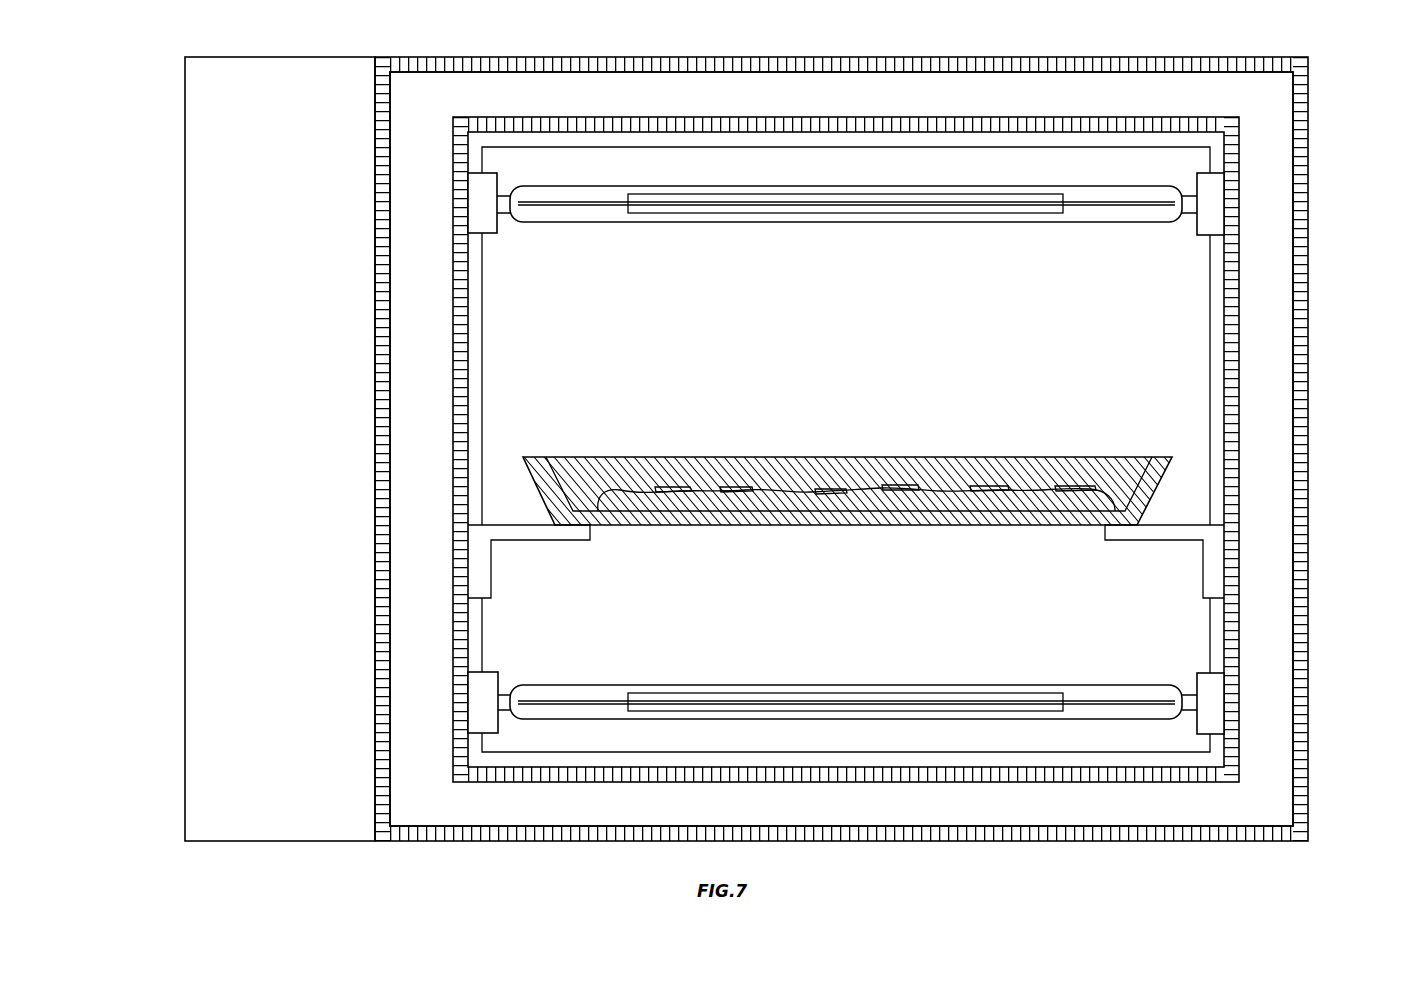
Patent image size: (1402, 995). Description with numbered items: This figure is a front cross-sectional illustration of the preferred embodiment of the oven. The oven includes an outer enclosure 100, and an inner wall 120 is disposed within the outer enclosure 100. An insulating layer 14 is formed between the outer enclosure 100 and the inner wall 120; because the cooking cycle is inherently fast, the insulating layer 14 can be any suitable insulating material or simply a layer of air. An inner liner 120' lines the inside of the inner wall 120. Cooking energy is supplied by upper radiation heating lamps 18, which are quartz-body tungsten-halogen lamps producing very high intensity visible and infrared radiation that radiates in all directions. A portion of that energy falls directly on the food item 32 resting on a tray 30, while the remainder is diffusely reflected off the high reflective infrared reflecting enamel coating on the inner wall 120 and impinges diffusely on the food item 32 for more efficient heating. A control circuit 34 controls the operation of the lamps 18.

The outer enclosure 100 is at (1305, 228).
The inner wall 120 is at (927, 449).
The liner 120' is at (763, 467).
The insulating layer 14 is at (1260, 412).
The upper radiation heating lamps 18 is at (1147, 188).
The cooking tray 30 is at (598, 457).
The food item 32 is at (788, 492).
The control circuit 34 is at (298, 736).